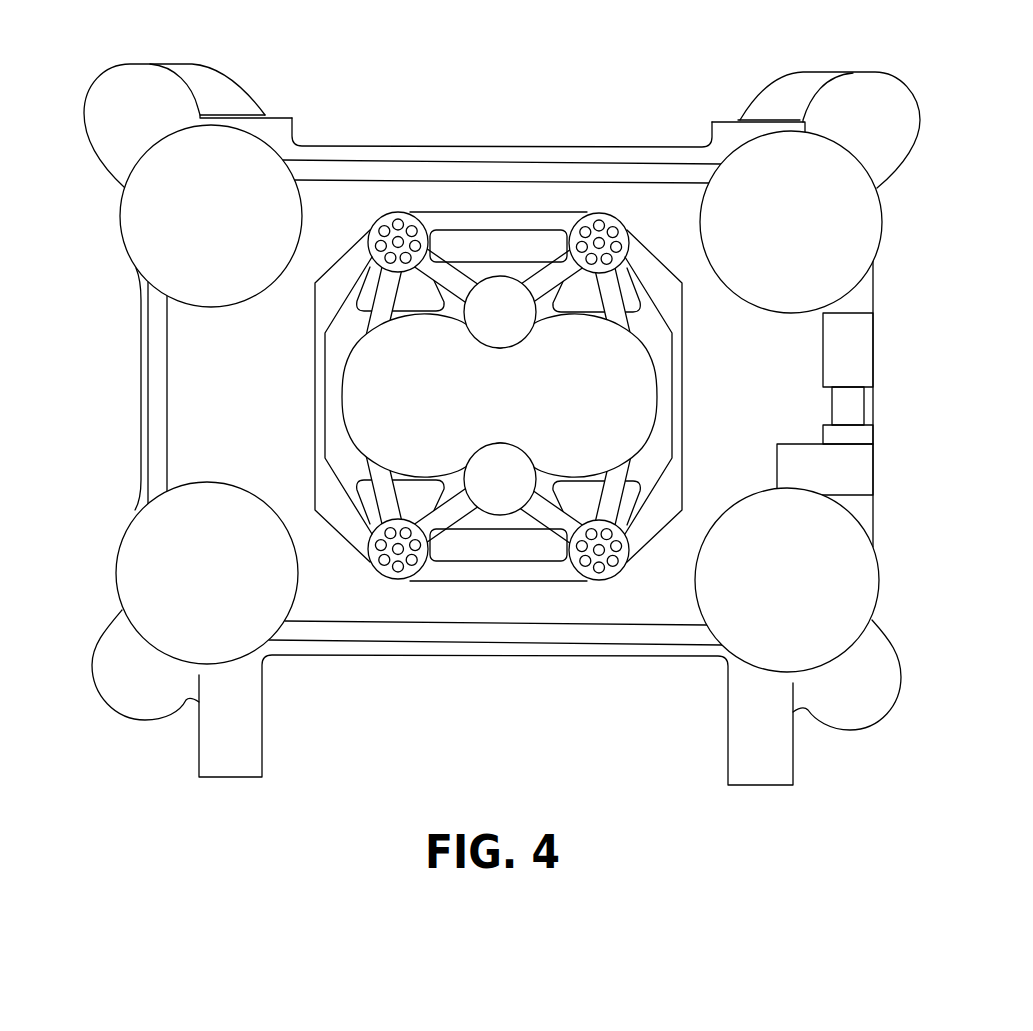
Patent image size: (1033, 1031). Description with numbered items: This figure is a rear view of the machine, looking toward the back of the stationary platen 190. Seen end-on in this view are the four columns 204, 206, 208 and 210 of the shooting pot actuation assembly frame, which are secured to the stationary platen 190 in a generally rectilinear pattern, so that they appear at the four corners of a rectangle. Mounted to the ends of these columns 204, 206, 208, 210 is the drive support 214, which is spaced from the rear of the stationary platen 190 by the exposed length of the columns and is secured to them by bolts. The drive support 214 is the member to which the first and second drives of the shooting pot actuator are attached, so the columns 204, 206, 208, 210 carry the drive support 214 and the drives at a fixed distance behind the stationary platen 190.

The stationary platen 190 is at (212, 396).
The column 204 is at (398, 212).
The column 206 is at (601, 213).
The column 208 is at (393, 579).
The column 210 is at (595, 580).
The drive support 214 is at (476, 573).